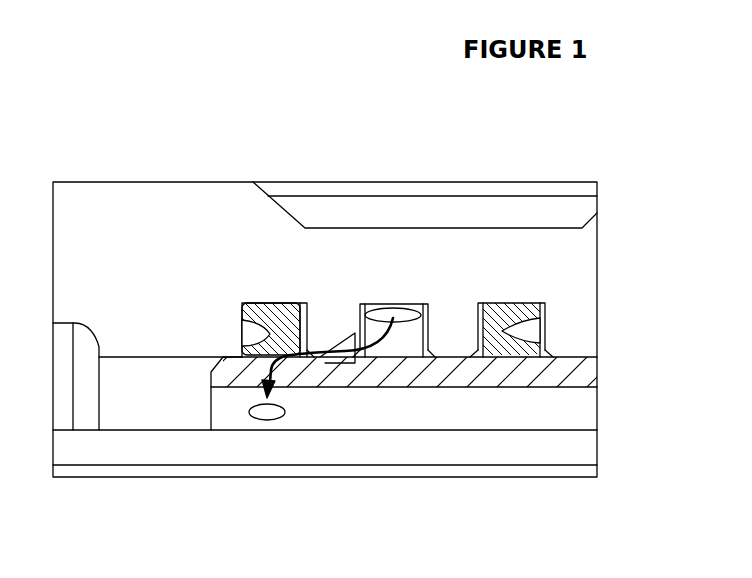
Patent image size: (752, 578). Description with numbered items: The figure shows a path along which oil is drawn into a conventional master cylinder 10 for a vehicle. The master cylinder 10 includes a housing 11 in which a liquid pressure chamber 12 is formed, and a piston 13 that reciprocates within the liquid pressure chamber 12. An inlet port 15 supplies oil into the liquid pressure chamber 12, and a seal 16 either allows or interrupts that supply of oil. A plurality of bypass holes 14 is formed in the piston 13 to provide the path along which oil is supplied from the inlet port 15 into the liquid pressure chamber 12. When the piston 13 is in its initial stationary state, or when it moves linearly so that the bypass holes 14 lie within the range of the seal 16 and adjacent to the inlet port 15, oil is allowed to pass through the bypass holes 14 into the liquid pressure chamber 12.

The master cylinder 10 is at (608, 168).
The housing 11 is at (170, 208).
The liquid pressure chamber 12 is at (160, 407).
The piston 13 is at (582, 372).
The bypass holes 14 is at (256, 374).
The inlet port 15 is at (398, 303).
The seal 16 is at (278, 303).